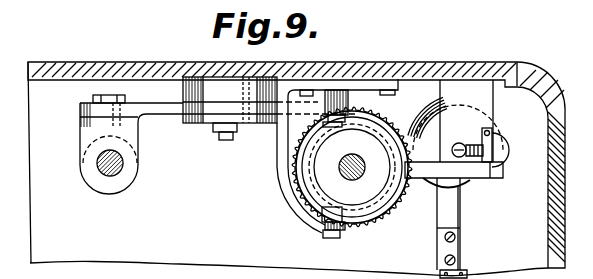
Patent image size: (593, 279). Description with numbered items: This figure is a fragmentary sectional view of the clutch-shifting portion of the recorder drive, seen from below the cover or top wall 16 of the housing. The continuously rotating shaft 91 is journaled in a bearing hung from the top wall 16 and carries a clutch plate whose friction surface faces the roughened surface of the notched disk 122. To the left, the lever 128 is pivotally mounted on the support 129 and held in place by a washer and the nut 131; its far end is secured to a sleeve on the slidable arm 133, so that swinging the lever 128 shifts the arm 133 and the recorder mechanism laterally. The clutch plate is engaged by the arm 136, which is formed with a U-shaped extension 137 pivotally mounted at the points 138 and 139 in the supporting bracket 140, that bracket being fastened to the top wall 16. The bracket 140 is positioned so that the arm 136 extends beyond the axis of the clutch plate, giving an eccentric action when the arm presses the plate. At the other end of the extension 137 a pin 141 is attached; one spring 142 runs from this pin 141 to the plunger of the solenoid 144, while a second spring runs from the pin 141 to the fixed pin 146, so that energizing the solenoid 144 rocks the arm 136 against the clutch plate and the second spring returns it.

The top wall 16 is at (395, 79).
The shaft 91 is at (345, 172).
The notched disk 122 is at (391, 229).
The lever 128 is at (175, 107).
The support 129 is at (183, 87).
The nut 131 is at (215, 136).
The arm 133 is at (118, 172).
The arm 136 is at (470, 184).
The U-shaped extension 137 is at (383, 128).
The pivot mounting 138 is at (328, 127).
The pivot mounting 139 is at (323, 229).
The supporting bracket 140 is at (288, 160).
The pin 141 is at (487, 153).
The spring 142 is at (478, 118).
The solenoid 144 is at (490, 145).
The fixed pin 146 is at (463, 235).